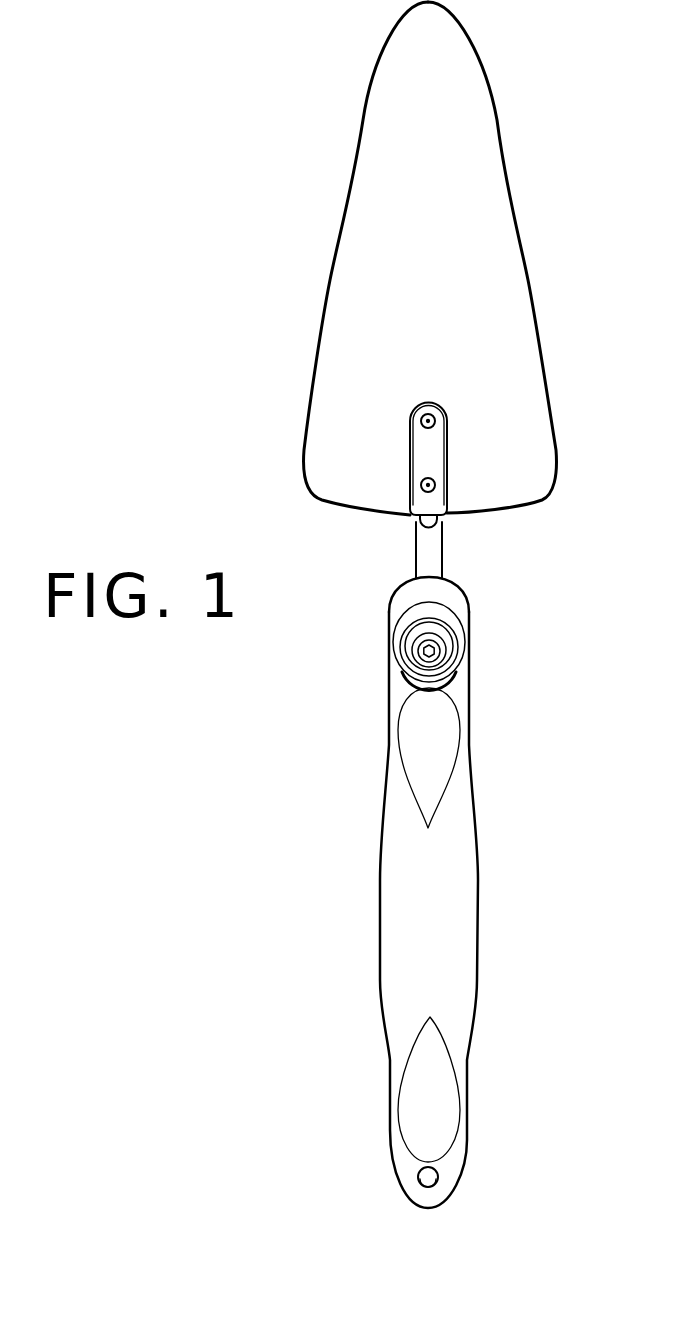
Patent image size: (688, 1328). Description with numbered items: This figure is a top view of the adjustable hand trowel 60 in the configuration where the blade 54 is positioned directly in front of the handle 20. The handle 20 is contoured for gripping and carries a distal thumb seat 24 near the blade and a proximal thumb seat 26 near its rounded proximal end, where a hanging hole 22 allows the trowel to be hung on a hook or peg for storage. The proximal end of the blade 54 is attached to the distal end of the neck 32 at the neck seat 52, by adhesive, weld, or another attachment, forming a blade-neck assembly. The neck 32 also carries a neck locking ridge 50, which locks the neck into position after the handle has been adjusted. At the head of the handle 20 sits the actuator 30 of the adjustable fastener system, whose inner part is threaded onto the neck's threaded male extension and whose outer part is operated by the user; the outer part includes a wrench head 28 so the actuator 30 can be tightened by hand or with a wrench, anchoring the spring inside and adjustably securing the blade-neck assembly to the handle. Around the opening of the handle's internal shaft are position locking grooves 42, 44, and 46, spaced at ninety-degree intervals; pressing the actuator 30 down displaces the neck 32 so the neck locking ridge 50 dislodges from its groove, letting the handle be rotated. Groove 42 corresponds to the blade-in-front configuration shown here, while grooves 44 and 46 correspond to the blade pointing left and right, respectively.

The adjustable hand trowel 60 is at (172, 60).
The blade 54 is at (475, 207).
The neck seat 52 is at (425, 455).
The neck 32 is at (427, 528).
The neck locking ridge 50 is at (427, 567).
The position locking groove 42 is at (435, 573).
The position locking groove 46 is at (470, 622).
The position locking groove 44 is at (390, 623).
The actuator 30 is at (442, 657).
The wrench head 28 is at (420, 655).
The distal thumb seat 24 is at (420, 732).
The handle 20 is at (452, 910).
The proximal thumb seat 26 is at (415, 1075).
The hanging hole 22 is at (430, 1185).